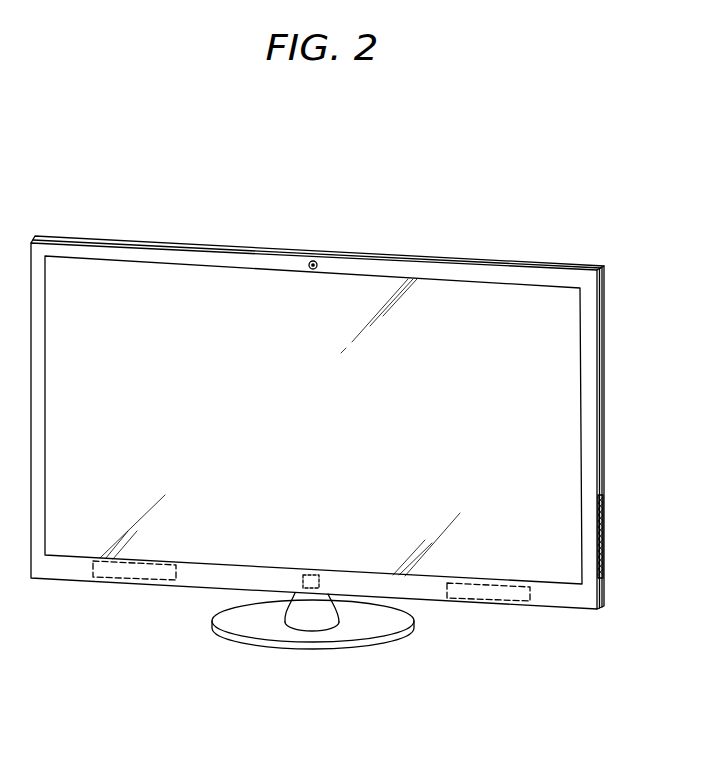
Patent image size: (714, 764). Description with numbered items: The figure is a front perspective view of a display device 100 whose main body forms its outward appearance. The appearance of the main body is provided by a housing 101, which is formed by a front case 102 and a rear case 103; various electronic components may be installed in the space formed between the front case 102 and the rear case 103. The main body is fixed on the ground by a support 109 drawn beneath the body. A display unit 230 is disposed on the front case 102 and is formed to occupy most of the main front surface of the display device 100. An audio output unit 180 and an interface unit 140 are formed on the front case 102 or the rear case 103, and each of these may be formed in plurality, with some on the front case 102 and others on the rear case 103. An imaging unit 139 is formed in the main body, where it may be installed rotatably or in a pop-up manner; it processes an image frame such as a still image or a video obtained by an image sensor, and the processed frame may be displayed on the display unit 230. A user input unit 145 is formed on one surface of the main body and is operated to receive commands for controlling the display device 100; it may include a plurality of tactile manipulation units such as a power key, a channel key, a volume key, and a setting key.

The display device 100 is at (521, 226).
The housing 101 is at (655, 437).
The front case 102 is at (668, 428).
The rear case 103 is at (598, 408).
The support 109 is at (323, 619).
The imaging unit 139 is at (313, 260).
The interface unit 140 is at (303, 588).
The user input unit 145 is at (605, 512).
The audio output unit 180 is at (113, 580).
The display unit 230 is at (165, 291).